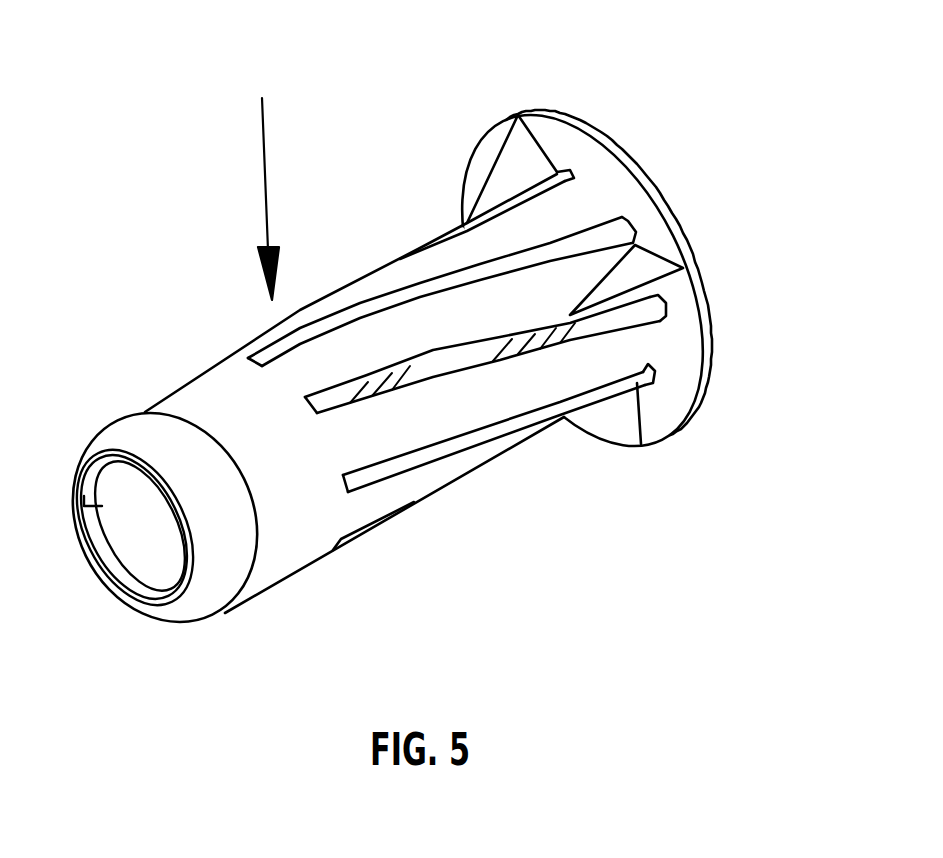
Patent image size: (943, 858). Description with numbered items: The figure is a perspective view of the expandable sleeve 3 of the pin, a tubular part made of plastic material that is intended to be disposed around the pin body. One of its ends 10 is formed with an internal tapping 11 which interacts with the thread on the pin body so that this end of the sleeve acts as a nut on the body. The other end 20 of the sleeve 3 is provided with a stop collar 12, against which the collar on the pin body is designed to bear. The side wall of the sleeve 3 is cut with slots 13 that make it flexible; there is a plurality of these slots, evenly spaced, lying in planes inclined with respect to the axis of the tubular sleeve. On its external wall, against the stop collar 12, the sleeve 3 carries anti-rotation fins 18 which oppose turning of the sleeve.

The expandable sleeve 3 is at (267, 181).
The end of the sleeve 10 is at (138, 433).
The internal tapping 11 is at (137, 543).
The stop collar 12 is at (627, 197).
The slots 13 is at (460, 360).
The anti-rotation fins 18 is at (508, 172).
The other end of the sleeve 20 is at (574, 210).